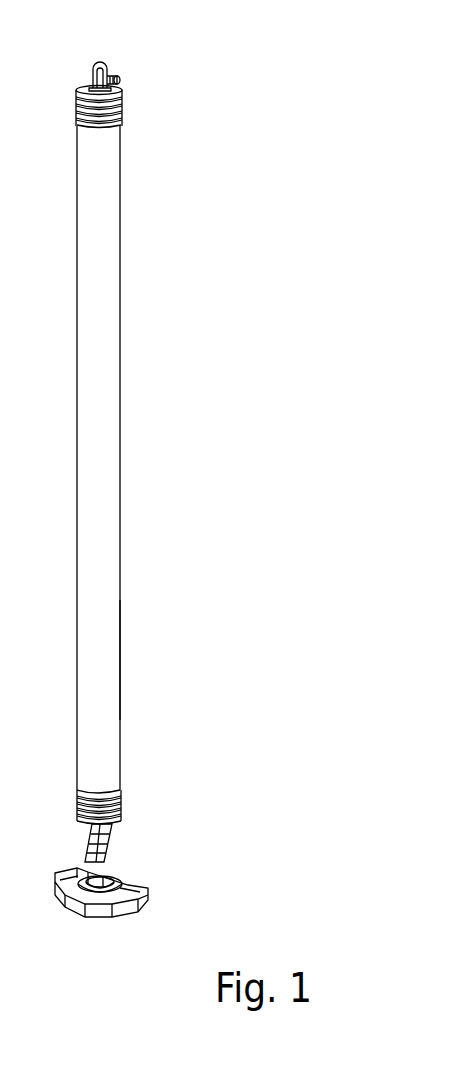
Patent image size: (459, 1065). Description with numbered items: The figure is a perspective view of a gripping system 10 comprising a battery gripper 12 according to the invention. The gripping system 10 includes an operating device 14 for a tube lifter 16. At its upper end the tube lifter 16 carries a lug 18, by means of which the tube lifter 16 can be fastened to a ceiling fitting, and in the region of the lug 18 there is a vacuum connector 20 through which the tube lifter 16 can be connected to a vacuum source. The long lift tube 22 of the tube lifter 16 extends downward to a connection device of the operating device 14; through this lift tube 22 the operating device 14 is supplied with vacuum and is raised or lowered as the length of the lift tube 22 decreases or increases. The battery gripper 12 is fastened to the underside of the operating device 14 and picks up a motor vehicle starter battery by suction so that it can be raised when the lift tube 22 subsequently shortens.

The gripping system 10 is at (240, 135).
The battery gripper 12 is at (128, 886).
The operating device 14 is at (110, 832).
The tube lifter 16 is at (108, 277).
The lug 18 is at (92, 57).
The vacuum connector 20 is at (122, 78).
The lift tube 22 is at (121, 665).